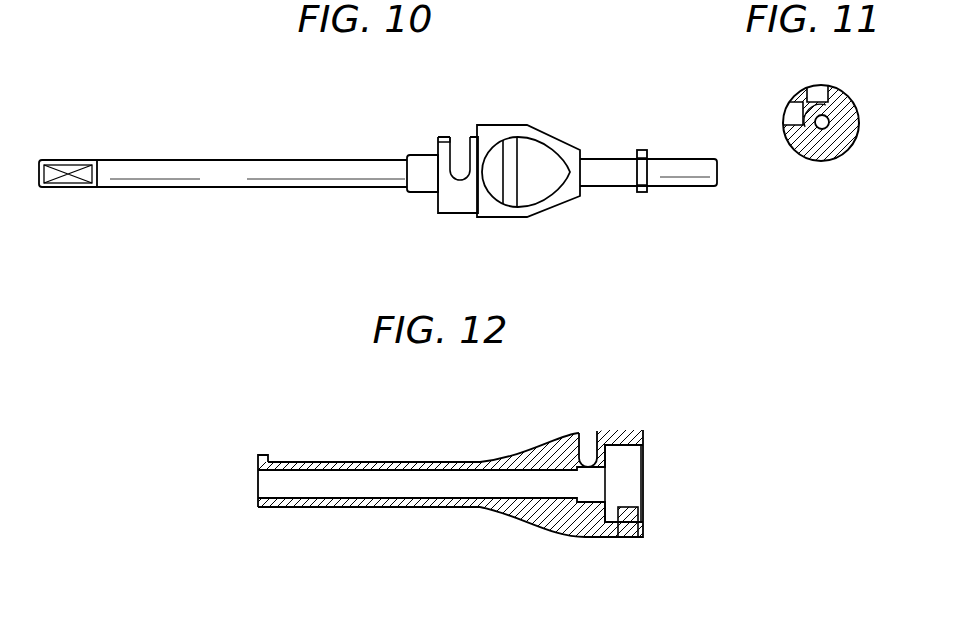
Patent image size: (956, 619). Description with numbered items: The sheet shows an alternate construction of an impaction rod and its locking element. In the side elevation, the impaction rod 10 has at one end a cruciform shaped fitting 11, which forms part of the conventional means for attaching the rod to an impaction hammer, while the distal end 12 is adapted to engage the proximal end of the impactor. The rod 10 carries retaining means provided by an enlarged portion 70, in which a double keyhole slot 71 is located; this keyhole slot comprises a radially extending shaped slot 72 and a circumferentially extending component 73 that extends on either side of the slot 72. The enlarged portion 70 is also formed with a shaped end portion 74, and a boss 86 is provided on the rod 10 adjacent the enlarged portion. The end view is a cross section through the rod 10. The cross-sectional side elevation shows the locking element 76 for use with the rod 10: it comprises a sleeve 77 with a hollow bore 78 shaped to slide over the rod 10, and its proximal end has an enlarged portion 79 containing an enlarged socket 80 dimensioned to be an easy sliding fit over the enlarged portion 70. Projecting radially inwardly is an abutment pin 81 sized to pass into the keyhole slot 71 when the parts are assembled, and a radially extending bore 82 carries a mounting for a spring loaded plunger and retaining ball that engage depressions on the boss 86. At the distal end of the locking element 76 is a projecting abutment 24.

In FIG. 10, the impaction rod 10 is at (297, 160).
In FIG. 10, the cruciform shaped fitting 11 is at (639, 149).
In FIG. 10, the distal end 12 is at (63, 161).
In FIG. 10, the enlarged portion 70 is at (438, 203).
In FIG. 10, the double keyhole slot 71 is at (457, 137).
In FIG. 10, the radially extending shaped slot 72 is at (446, 137).
In FIG. 10, the circumferentially extending component 73 is at (463, 153).
In FIG. 10, the shaped end portion 74 is at (548, 207).
In FIG. 10, the boss 86 is at (422, 189).
In FIG. 12, the projecting abutment 24 is at (261, 455).
In FIG. 12, the locking element 76 is at (400, 462).
In FIG. 12, the sleeve 77 is at (440, 507).
In FIG. 12, the hollow bore 78 is at (297, 483).
In FIG. 12, the enlarged portion 79 is at (572, 530).
In FIG. 12, the enlarged socket 80 is at (628, 463).
In FIG. 12, the abutment pin 81 is at (637, 512).
In FIG. 12, the radially extending bore 82 is at (590, 446).